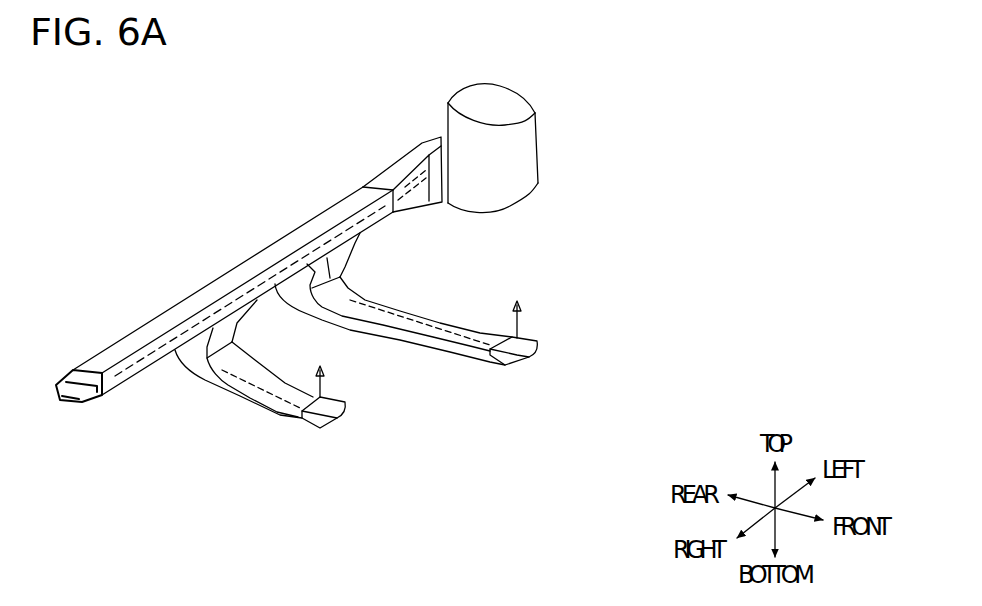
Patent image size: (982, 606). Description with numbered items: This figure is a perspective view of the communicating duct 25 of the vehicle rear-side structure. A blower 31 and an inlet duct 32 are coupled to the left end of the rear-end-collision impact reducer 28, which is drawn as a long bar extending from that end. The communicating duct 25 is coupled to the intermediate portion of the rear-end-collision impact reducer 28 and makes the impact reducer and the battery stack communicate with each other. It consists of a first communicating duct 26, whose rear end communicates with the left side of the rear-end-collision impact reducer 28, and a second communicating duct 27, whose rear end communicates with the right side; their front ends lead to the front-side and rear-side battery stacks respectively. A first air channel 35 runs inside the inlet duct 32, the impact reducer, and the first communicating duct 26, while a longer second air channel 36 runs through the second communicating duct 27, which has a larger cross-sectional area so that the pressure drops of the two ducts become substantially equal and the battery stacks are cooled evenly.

The communicating duct 25 is at (356, 389).
The first communicating duct 26 is at (477, 363).
The second communicating duct 27 is at (300, 433).
The rear-end-collision impact reducer 28 is at (162, 313).
The blower 31 is at (439, 136).
The inlet duct 32 is at (392, 166).
The first air channel 35 is at (519, 323).
The second air channel 36 is at (322, 380).